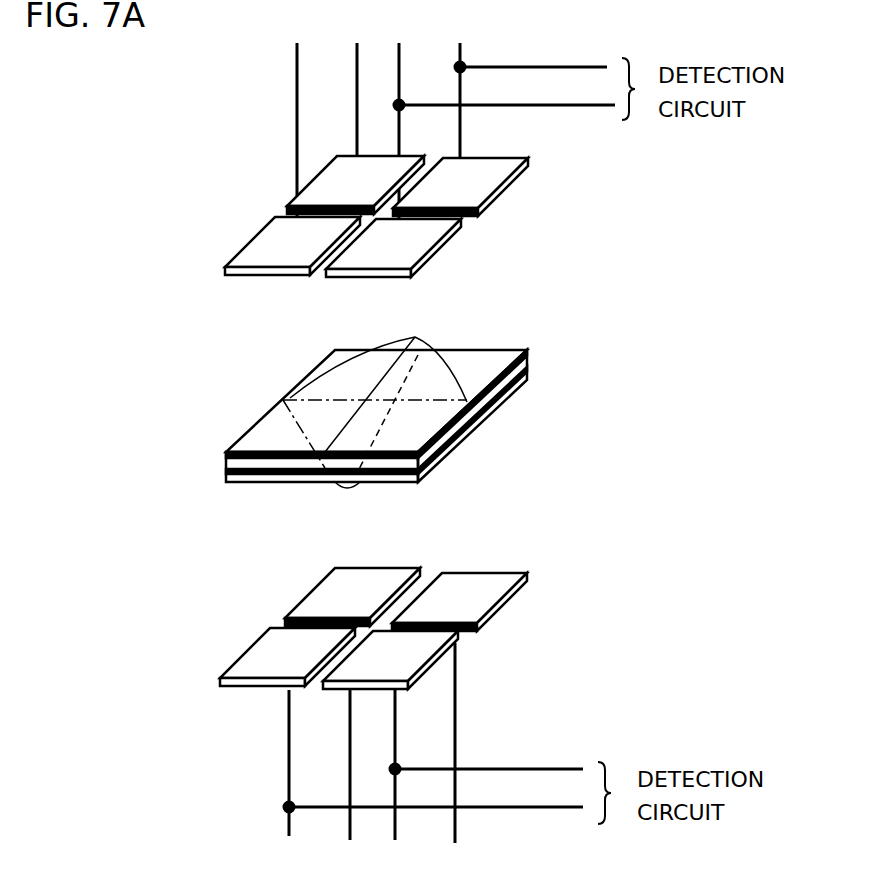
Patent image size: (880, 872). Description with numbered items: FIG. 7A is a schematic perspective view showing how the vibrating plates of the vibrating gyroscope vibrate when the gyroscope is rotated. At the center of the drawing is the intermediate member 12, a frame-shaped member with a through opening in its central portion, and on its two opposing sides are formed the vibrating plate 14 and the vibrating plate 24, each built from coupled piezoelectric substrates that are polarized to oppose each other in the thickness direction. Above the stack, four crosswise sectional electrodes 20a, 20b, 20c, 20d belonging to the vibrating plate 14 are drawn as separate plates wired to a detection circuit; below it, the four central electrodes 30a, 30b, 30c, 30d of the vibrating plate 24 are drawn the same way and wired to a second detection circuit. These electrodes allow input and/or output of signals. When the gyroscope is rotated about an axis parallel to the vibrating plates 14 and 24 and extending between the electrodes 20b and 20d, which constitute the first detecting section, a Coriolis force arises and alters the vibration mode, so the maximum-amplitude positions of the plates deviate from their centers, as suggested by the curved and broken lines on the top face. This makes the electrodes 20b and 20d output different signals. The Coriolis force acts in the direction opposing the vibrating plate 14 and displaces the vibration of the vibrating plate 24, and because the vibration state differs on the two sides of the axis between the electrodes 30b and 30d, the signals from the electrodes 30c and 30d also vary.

The intermediate member 12 is at (463, 433).
The vibrating plate 14 is at (517, 387).
The vibrating plate 24 is at (442, 463).
The electrode 20a is at (327, 187).
The electrode 20b is at (490, 185).
The electrode 20c is at (277, 243).
The electrode 20d is at (423, 247).
The electrode 30a is at (318, 595).
The electrode 30b is at (463, 593).
The electrode 30c is at (260, 655).
The electrode 30d is at (398, 658).